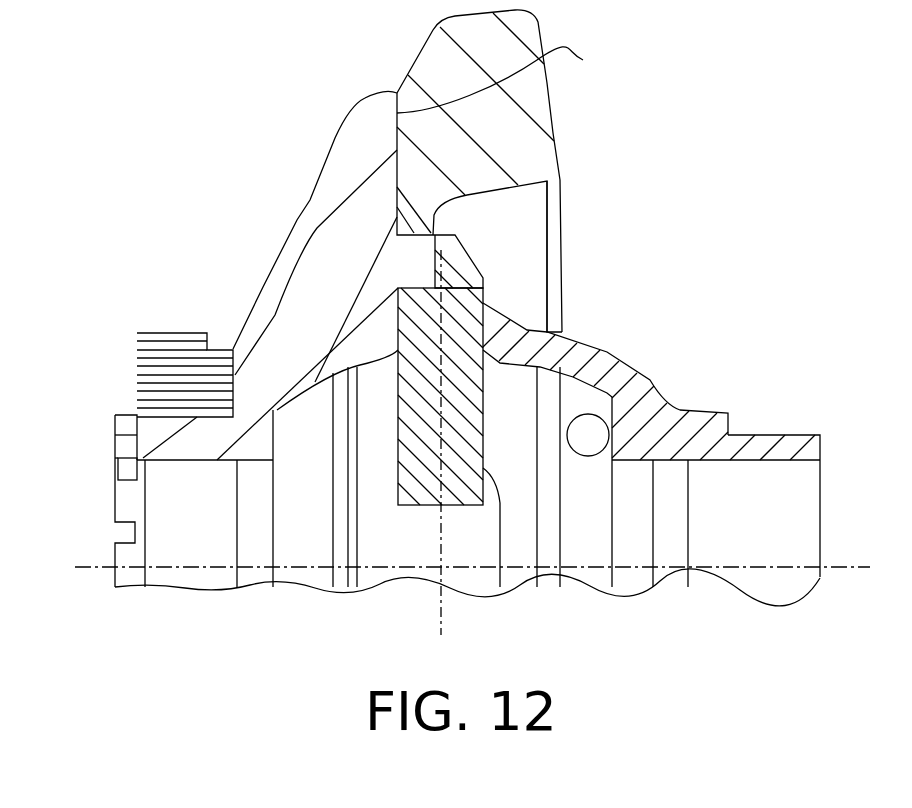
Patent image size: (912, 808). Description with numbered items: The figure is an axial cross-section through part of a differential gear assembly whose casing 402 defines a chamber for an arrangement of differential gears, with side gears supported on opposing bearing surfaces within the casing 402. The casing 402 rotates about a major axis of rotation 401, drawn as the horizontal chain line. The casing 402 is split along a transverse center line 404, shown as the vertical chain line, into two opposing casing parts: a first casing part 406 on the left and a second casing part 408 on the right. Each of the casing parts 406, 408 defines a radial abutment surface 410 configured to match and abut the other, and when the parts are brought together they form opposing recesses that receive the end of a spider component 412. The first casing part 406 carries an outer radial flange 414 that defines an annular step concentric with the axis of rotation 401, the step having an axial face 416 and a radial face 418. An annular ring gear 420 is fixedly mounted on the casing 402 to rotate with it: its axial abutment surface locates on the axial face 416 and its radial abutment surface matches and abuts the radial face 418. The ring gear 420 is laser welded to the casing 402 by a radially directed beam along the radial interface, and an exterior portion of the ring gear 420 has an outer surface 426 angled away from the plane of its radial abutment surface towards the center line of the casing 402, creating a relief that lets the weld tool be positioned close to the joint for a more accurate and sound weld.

The major axis of rotation 401 is at (100, 565).
The casing 402 is at (268, 615).
The transverse center line 404 is at (447, 622).
The first casing part 406 is at (115, 432).
The casing part 408 is at (793, 433).
The radial abutment surface 410 is at (397, 270).
The spider component 412 is at (503, 585).
The outer radial flange 414 is at (367, 128).
The axial face 416 is at (397, 205).
The radial face 418 is at (516, 79).
The annular ring gear 420 is at (538, 116).
The outer surface 426 is at (414, 46).